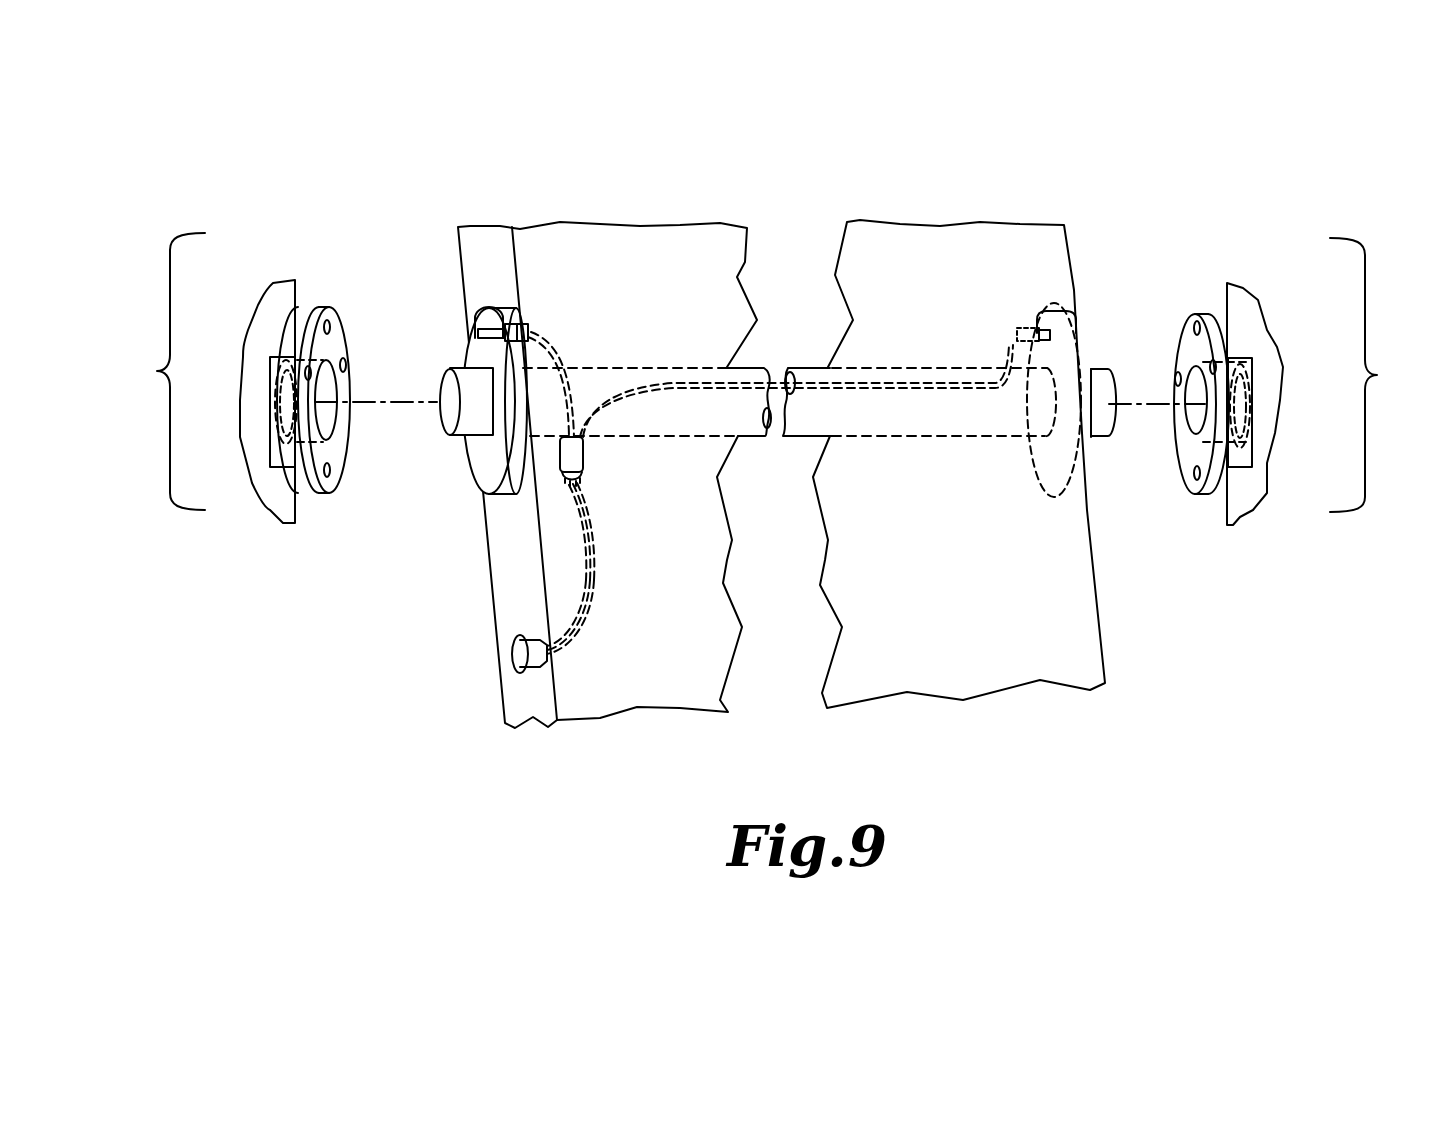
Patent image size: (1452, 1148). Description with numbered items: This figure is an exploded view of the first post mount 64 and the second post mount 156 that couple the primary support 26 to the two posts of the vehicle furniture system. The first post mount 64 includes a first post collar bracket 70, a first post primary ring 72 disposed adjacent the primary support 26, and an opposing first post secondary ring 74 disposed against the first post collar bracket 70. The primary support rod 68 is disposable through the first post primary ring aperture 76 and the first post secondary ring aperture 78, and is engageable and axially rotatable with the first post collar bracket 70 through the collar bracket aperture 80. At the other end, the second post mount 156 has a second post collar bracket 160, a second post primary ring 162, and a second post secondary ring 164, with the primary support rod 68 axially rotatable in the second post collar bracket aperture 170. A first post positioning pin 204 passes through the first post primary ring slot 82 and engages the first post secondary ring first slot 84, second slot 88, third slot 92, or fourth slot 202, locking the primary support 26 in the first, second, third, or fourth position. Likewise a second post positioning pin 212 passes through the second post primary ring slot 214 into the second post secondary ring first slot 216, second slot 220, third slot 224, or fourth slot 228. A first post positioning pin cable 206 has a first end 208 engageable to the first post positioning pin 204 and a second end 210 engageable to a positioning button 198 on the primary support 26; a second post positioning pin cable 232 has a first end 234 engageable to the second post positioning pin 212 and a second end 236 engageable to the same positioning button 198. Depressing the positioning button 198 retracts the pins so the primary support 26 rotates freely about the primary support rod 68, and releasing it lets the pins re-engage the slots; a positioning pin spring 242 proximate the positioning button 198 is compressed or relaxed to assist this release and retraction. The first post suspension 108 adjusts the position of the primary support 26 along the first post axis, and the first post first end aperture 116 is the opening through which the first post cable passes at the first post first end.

The primary support 26 is at (988, 690).
The first post mount 64 is at (160, 371).
The primary support rod 68 is at (443, 420).
The first post collar bracket 70 is at (287, 358).
The first post primary ring 72 is at (472, 345).
The first post secondary ring 74 is at (345, 323).
The first post primary ring aperture 76 is at (465, 435).
The first post secondary ring aperture 78 is at (333, 422).
The collar bracket aperture 80 is at (280, 400).
The first post primary ring slot 82 is at (506, 324).
The first post secondary ring first slot 84 is at (327, 307).
The first post secondary ring second slot 88 is at (297, 343).
The first post secondary ring third slot 92 is at (330, 477).
The first post suspension 108 is at (1193, 423).
The first post first end aperture 116 is at (1091, 437).
The second post mount 156 is at (1379, 375).
The second post collar bracket 160 is at (1247, 370).
The second post primary ring 162 is at (1060, 493).
The second post secondary ring 164 is at (1182, 328).
The second post collar bracket aperture 170 is at (1247, 417).
The positioning button 198 is at (512, 657).
The first post secondary ring fourth slot 202 is at (1177, 375).
The first post positioning pin 204 is at (467, 338).
The first post positioning pin cable 206 is at (572, 505).
The first post positioning pin cable first end 208 is at (558, 355).
The first post positioning pin cable second end 210 is at (582, 600).
The second post positioning pin 212 is at (1029, 318).
The second post primary ring slot 214 is at (1073, 337).
The second post secondary ring first slot 216 is at (1195, 317).
The second post secondary ring second slot 220 is at (1213, 363).
The second post secondary ring third slot 224 is at (1197, 480).
The second post secondary ring fourth slot 228 is at (347, 363).
The second post positioning pin cable 232 is at (923, 388).
The second post positioning pin cable first end 234 is at (585, 487).
The second post positioning pin cable second end 236 is at (1015, 333).
The positioning pin spring 242 is at (560, 462).